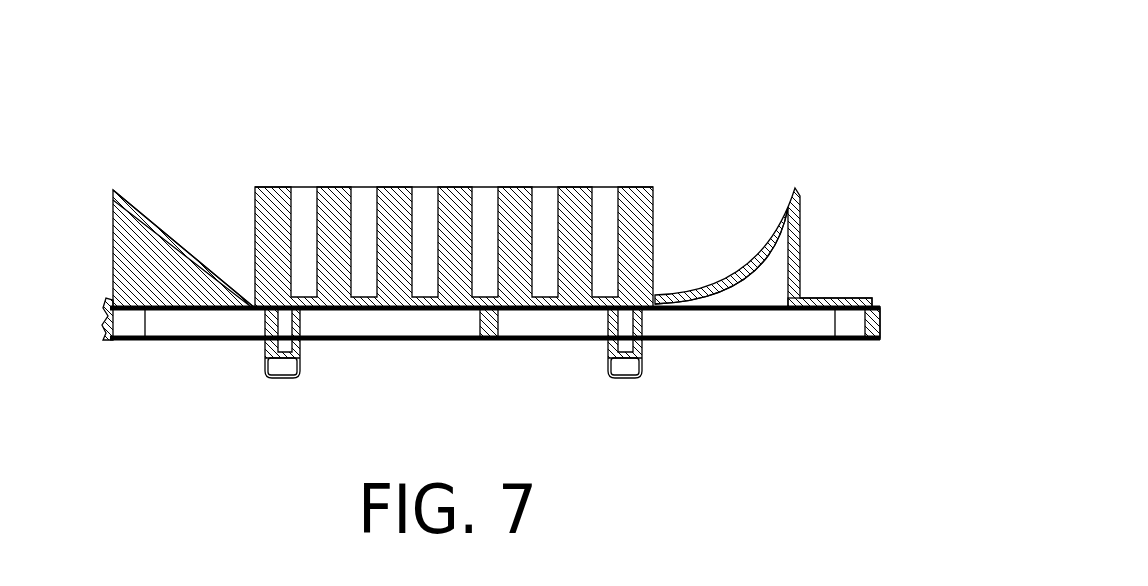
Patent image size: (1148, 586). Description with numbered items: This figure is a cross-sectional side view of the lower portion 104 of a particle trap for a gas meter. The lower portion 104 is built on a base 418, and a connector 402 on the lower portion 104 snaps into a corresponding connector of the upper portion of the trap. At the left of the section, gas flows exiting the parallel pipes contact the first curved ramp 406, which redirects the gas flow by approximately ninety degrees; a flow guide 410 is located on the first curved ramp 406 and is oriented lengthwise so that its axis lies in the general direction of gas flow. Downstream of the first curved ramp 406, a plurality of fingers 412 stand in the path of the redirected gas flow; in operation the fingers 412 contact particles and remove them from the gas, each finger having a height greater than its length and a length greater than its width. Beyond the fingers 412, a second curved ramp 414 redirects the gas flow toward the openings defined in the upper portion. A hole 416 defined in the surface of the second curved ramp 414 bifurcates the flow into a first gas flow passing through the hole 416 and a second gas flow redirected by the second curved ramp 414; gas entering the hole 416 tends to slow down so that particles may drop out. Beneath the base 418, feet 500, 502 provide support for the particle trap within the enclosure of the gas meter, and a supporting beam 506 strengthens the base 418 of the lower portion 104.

The lower portion 104 is at (716, 74).
The connector 402 is at (875, 317).
The first curved ramp 406 is at (147, 242).
The flow guide 410 is at (189, 251).
The fingers 412 is at (518, 187).
The second curved ramp 414 is at (783, 212).
The hole 416 is at (725, 285).
The base 418 is at (832, 300).
The foot 500 is at (278, 378).
The foot 502 is at (622, 376).
The supporting beam 506 is at (490, 337).